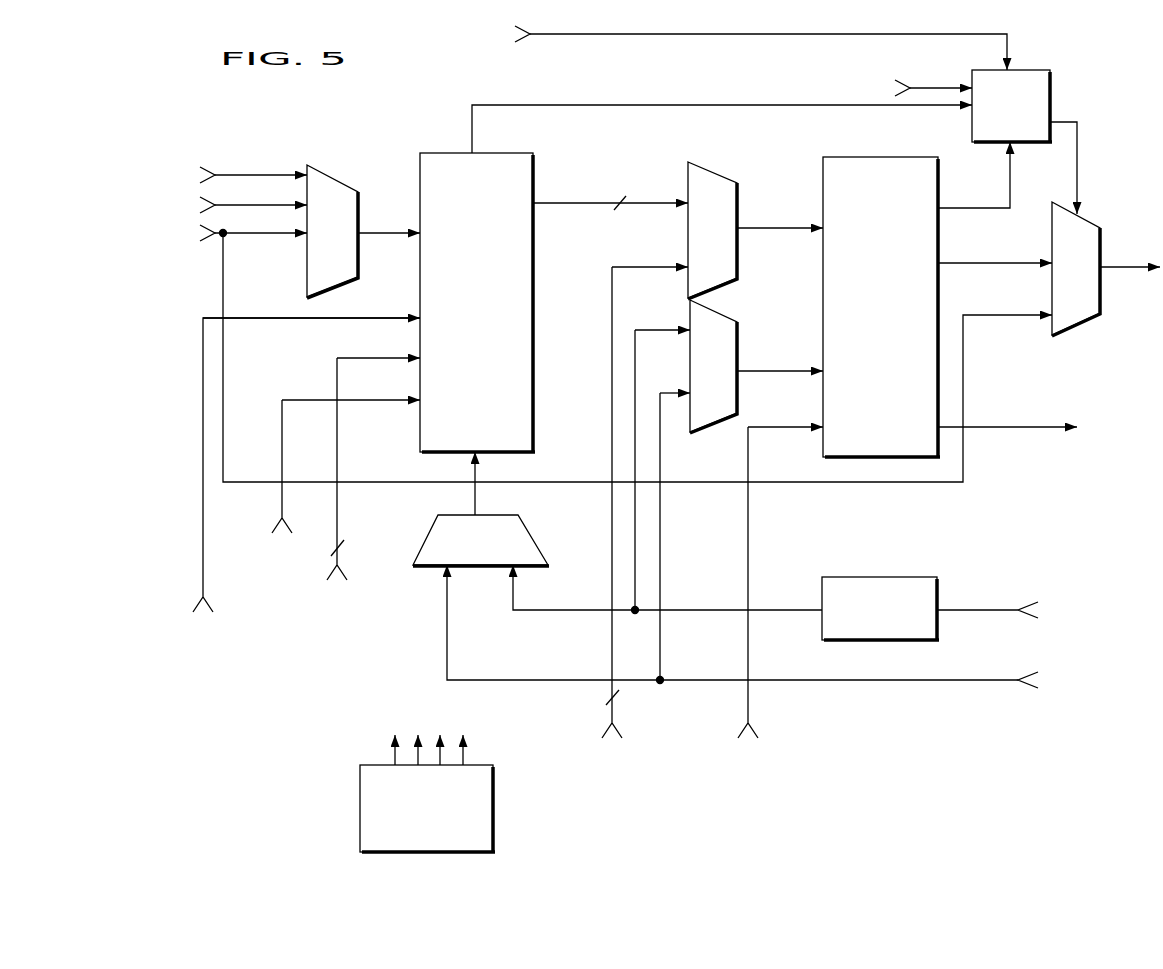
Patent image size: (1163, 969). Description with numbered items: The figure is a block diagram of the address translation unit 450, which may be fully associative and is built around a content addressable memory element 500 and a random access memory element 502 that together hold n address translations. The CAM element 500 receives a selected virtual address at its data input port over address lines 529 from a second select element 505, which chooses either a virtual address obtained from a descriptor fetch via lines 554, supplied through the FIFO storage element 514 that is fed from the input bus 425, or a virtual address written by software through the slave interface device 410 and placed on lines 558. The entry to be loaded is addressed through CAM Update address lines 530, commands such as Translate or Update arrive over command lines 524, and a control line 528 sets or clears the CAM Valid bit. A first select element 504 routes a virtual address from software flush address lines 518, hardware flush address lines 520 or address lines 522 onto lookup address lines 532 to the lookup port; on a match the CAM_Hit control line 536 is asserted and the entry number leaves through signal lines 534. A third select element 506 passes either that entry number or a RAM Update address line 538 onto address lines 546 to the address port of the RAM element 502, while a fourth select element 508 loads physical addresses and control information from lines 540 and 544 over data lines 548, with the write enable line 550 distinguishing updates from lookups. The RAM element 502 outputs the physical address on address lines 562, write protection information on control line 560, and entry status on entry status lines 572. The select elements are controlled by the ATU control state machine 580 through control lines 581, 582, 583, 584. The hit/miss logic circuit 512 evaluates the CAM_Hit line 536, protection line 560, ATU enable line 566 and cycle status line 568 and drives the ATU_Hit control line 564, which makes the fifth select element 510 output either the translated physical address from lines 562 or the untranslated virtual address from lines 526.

The content addressable memory element 500 is at (477, 303).
The random access memory element 502 is at (881, 307).
The first select element 504 is at (332, 231).
The second select element 505 is at (481, 540).
The third select element 506 is at (712, 230).
The fourth select element 508 is at (713, 366).
The fifth select element 510 is at (1076, 269).
The hit/miss logic circuit 512 is at (1024, 142).
The FIFO storage element 514 is at (880, 609).
The ATU control state machine 580 is at (475, 731).
The software flush address lines 518 is at (233, 175).
The hardware flush address lines 520 is at (233, 205).
The address lines 522 is at (233, 233).
The command lines 524 is at (203, 497).
The virtual address lines 526 is at (222, 293).
The control line 528 is at (303, 399).
The address lines 529 is at (476, 496).
The CAM Update address lines 530 is at (339, 500).
The lookup address lines 532 is at (386, 231).
The signal lines 534 is at (577, 202).
The CAM_Hit control line 536 is at (638, 103).
The RAM Update address line 538 is at (617, 706).
The lines 540 is at (634, 613).
The lines 544 is at (662, 677).
The address lines 546 is at (760, 226).
The data lines 548 is at (762, 370).
The write enable line 550 is at (751, 712).
The lines 554 is at (516, 600).
The lines 558 is at (450, 632).
The control line 560 is at (950, 208).
The address lines 562 is at (966, 264).
The ATU_Hit control line 564 is at (1080, 170).
The ATU enable line 566 is at (911, 88).
The cycle status line 568 is at (740, 46).
The entry status lines 572 is at (1027, 427).
The control line 581 is at (333, 178).
The control line 582 is at (531, 535).
The control line 583 is at (717, 174).
The control line 584 is at (717, 421).
The slave interface device 410 is at (1063, 681).
The input bus 425 is at (1063, 611).
The address translation unit 450 is at (230, 716).